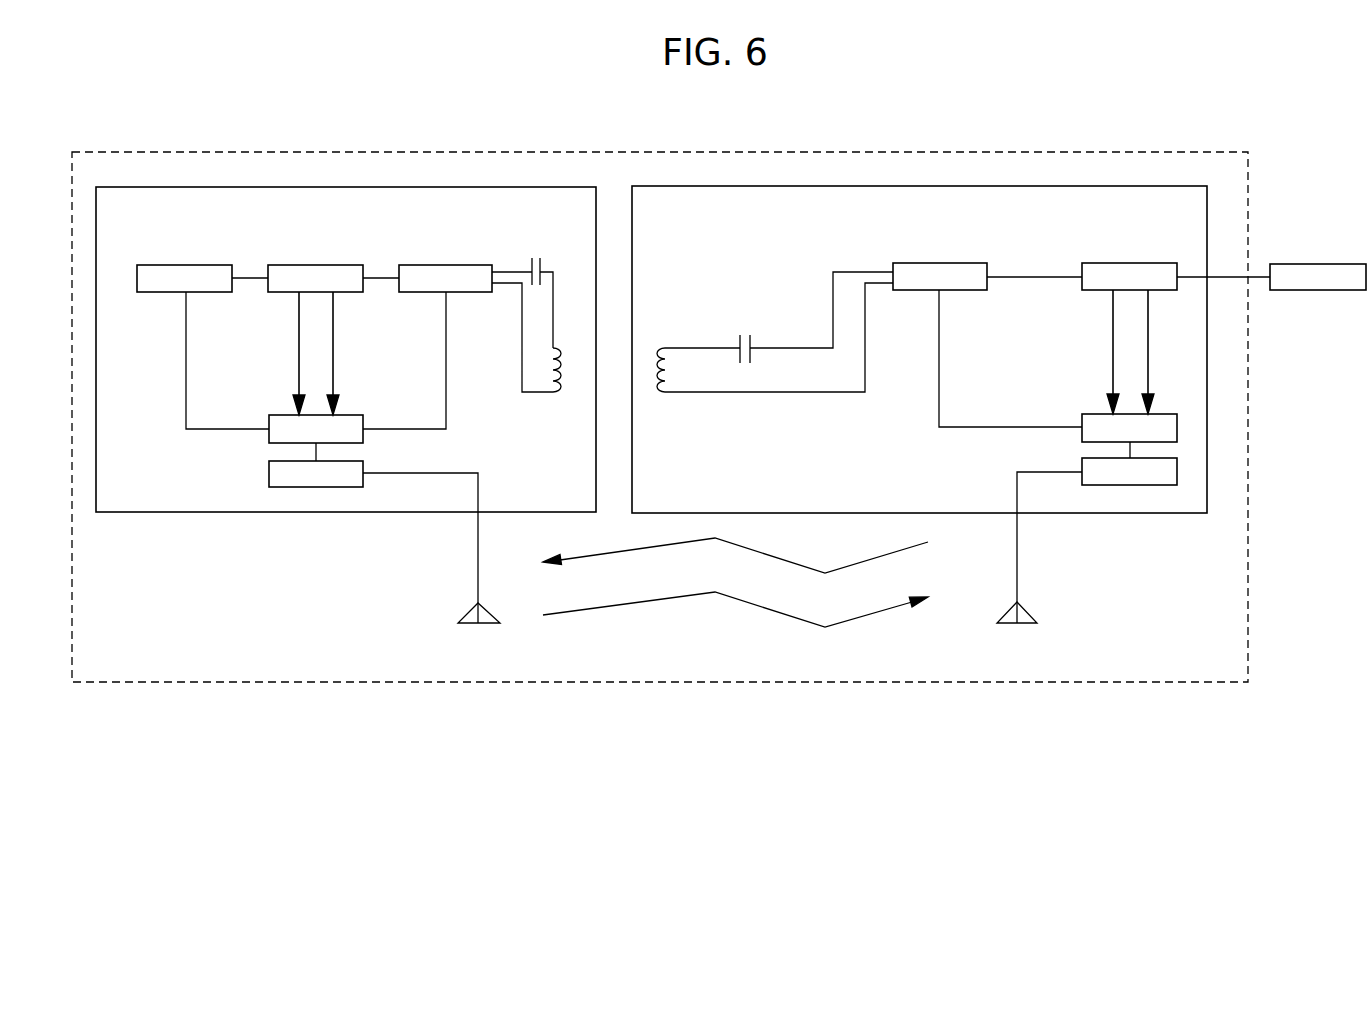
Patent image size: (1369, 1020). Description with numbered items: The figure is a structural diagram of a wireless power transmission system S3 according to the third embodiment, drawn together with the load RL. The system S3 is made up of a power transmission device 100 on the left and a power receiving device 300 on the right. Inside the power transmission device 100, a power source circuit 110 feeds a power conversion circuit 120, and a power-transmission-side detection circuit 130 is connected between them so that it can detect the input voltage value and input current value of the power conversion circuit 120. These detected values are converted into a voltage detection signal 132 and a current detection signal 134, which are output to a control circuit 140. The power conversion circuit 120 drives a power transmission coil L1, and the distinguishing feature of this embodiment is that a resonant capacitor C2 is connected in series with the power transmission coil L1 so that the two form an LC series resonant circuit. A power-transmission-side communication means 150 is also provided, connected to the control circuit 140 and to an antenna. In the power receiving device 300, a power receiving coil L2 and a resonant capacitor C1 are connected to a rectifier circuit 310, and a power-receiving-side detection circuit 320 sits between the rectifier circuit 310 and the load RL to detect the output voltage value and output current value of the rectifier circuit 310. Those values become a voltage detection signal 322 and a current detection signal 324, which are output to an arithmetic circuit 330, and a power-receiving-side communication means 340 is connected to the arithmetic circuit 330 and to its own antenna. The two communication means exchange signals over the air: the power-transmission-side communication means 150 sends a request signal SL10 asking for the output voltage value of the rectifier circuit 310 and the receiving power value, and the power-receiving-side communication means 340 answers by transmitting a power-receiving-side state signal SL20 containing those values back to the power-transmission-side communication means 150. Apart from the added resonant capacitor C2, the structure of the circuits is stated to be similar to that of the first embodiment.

The wireless power transmission system S3 is at (620, 683).
The power transmission device 100 is at (317, 513).
The power source circuit 110 is at (186, 265).
The power conversion circuit 120 is at (447, 265).
The power-transmission-side detection circuit 130 is at (318, 265).
The voltage detection signal 132 is at (298, 342).
The current detection signal 134 is at (334, 342).
The control circuit 140 is at (347, 415).
The power-transmission-side communication means 150 is at (270, 467).
The resonant capacitor C2 is at (558, 250).
The power transmission coil L1 is at (565, 382).
The power receiving device 300 is at (1103, 513).
The rectifier circuit 310 is at (940, 263).
The power-receiving-side detection circuit 320 is at (1130, 263).
The voltage detection signal 322 is at (1111, 340).
The current detection signal 324 is at (1173, 328).
The arithmetic circuit 330 is at (1096, 414).
The power-receiving-side communication means 340 is at (1082, 466).
The resonant capacitor C1 is at (745, 333).
The power receiving coil L2 is at (662, 380).
The load RL is at (1318, 264).
The request signal SL10 is at (680, 597).
The power-receiving-side state signal SL20 is at (680, 543).